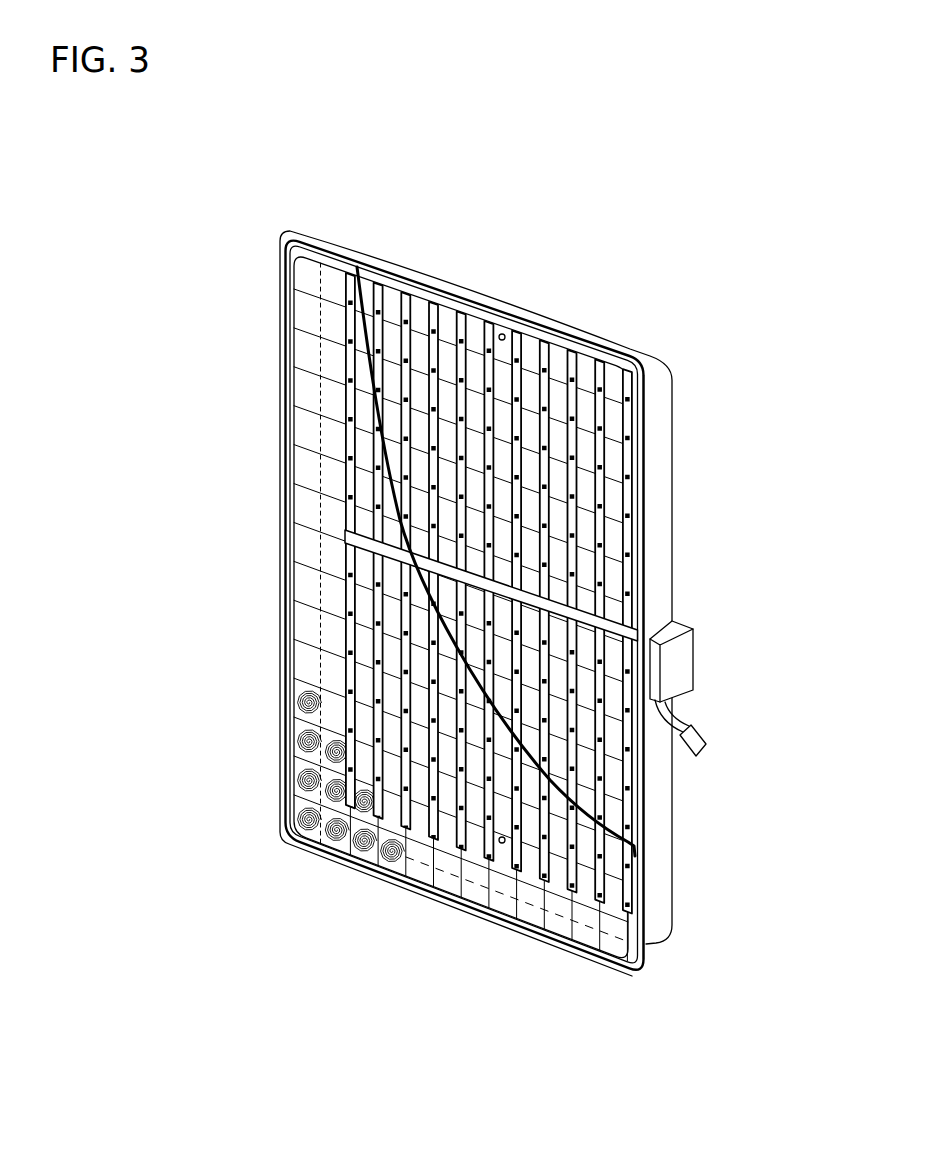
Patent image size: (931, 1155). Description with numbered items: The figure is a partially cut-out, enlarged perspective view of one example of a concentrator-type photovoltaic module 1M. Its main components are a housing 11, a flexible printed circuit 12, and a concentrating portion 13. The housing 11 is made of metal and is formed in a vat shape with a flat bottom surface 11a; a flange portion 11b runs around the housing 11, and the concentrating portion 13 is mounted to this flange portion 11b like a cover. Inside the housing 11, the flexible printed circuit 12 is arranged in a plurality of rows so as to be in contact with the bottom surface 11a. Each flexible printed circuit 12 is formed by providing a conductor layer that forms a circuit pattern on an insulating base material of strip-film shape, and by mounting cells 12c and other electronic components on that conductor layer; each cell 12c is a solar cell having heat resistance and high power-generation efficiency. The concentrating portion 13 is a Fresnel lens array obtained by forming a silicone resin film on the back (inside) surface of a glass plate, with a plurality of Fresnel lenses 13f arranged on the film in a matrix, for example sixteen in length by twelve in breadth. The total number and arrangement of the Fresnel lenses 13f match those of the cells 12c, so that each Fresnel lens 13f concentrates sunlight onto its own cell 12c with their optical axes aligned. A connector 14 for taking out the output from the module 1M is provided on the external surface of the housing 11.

The photovoltaic module of a concentrator type 1M is at (512, 238).
The housing 11 is at (668, 498).
The bottom surface 11a is at (418, 312).
The flange portion 11b is at (633, 366).
The flexible printed circuit 12 is at (610, 565).
The cell 12c is at (601, 795).
The concentrating portion 13 is at (439, 902).
The Fresnel lens 13f is at (305, 783).
The connector 14 is at (673, 722).